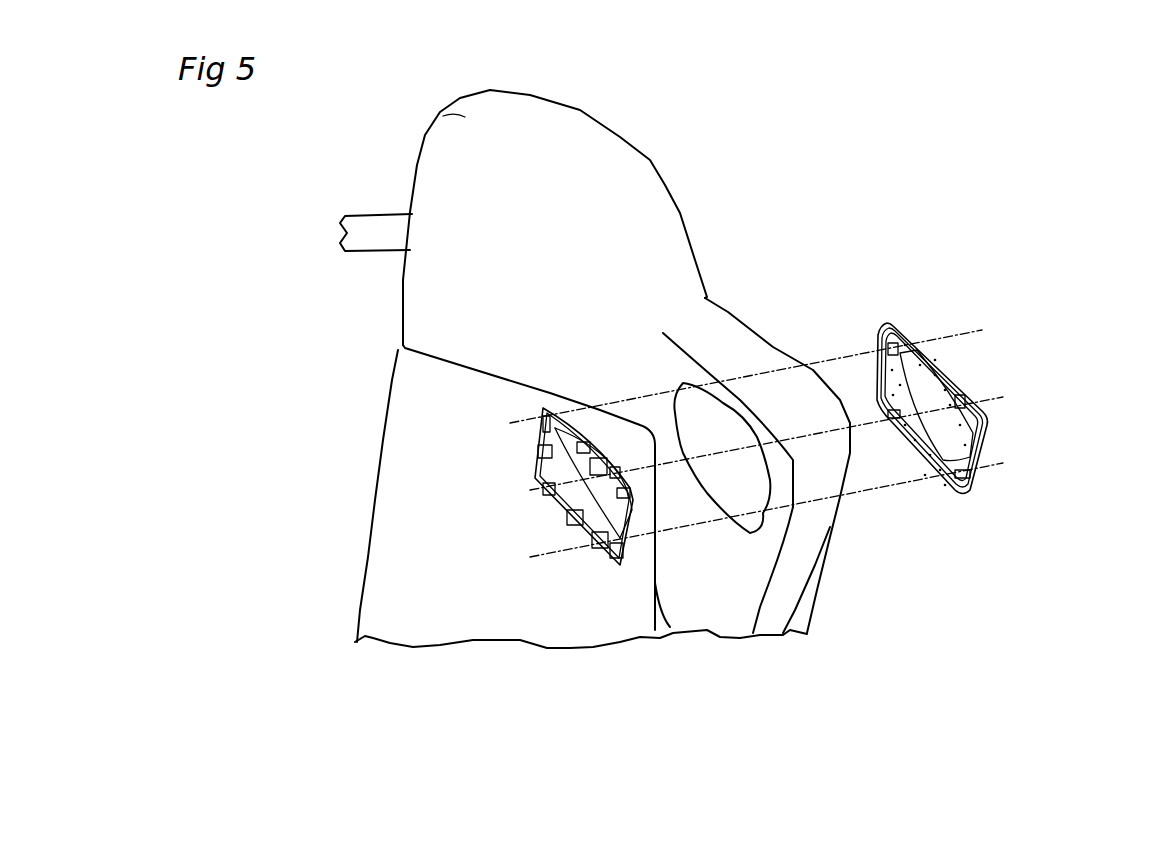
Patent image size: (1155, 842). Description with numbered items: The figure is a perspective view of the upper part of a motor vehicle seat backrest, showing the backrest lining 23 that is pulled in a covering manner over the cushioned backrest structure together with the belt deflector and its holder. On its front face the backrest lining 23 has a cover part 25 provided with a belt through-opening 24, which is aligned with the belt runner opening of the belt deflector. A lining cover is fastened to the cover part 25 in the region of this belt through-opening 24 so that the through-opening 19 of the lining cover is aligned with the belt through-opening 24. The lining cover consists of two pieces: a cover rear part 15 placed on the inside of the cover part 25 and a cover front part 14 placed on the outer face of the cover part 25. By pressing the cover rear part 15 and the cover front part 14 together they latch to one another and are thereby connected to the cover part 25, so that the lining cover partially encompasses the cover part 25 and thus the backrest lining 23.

The cover front part 14 is at (500, 472).
The cover rear part 15 is at (978, 361).
The through-opening 19 is at (963, 440).
The backrest lining 23 is at (684, 210).
The belt through-opening 24 is at (748, 497).
The cover part 25 is at (482, 563).